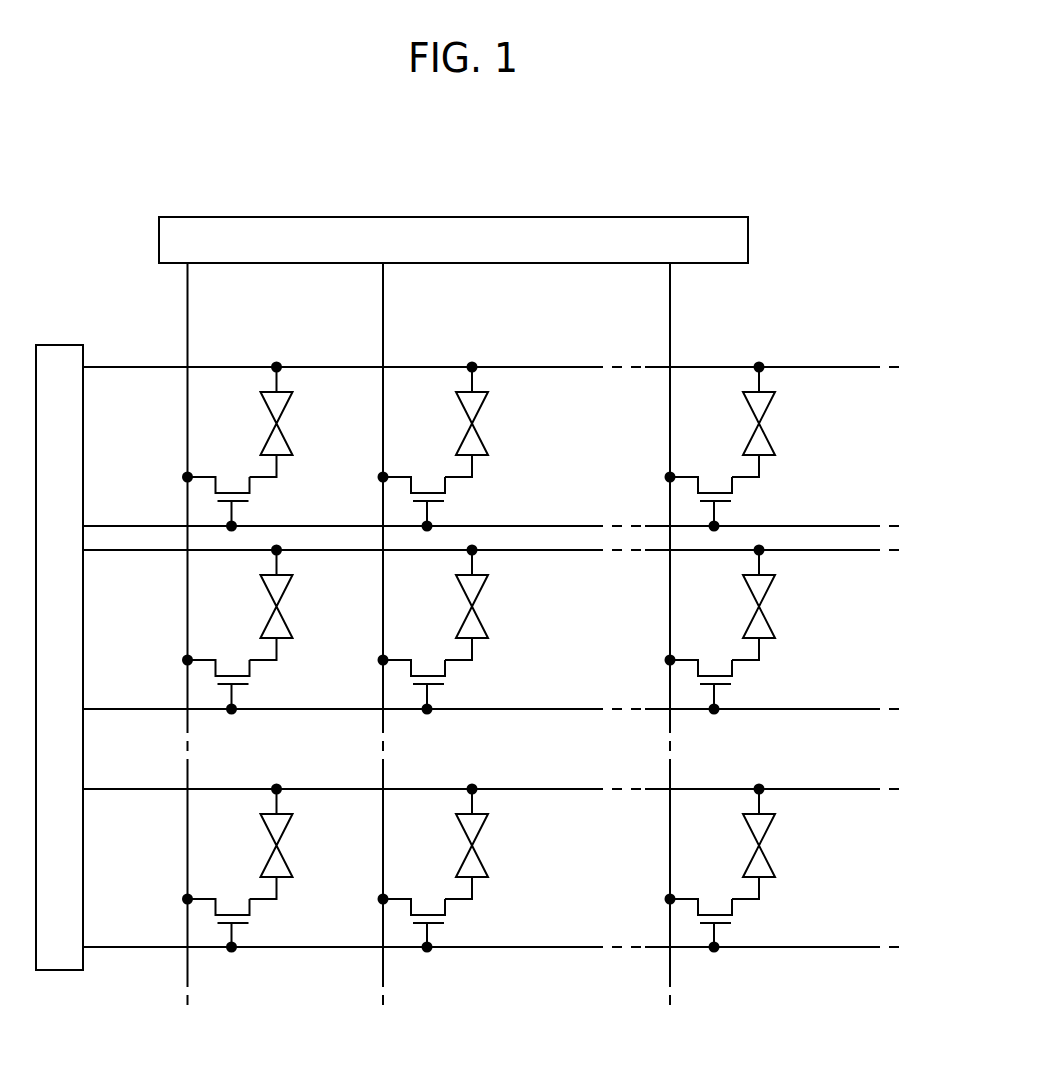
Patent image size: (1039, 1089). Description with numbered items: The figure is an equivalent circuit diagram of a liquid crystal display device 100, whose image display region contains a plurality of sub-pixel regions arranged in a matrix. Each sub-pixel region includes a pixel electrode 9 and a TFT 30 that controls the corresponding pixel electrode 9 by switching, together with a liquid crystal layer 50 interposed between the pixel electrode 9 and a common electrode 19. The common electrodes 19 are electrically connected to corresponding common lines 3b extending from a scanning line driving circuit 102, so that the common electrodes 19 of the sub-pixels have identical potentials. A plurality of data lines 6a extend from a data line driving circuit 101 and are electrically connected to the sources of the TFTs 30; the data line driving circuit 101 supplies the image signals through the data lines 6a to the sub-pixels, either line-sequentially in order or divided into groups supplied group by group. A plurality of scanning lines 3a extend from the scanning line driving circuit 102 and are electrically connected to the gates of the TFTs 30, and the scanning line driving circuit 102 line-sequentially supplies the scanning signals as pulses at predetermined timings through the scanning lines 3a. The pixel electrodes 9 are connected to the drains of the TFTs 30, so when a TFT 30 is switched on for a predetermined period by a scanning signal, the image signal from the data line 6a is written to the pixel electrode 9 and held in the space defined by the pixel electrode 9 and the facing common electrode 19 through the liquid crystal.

The liquid crystal display device 100 is at (600, 158).
The data line driving circuit 101 is at (159, 240).
The scanning line driving circuit 102 is at (52, 345).
The scanning line 3a is at (163, 947).
The common line 3b is at (168, 789).
The data line 6a is at (702, 327).
The common electrode 19 is at (808, 384).
The pixel electrode 9 is at (806, 458).
The TFT 30 is at (751, 500).
The liquid crystal layer 50 is at (236, 421).